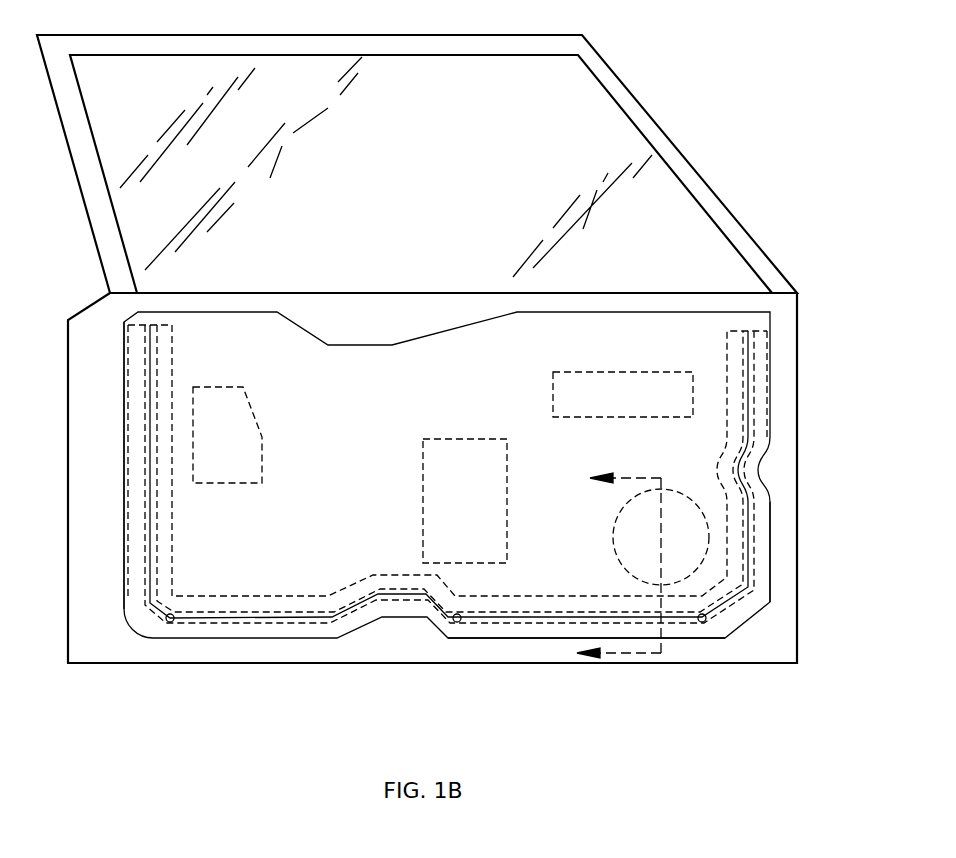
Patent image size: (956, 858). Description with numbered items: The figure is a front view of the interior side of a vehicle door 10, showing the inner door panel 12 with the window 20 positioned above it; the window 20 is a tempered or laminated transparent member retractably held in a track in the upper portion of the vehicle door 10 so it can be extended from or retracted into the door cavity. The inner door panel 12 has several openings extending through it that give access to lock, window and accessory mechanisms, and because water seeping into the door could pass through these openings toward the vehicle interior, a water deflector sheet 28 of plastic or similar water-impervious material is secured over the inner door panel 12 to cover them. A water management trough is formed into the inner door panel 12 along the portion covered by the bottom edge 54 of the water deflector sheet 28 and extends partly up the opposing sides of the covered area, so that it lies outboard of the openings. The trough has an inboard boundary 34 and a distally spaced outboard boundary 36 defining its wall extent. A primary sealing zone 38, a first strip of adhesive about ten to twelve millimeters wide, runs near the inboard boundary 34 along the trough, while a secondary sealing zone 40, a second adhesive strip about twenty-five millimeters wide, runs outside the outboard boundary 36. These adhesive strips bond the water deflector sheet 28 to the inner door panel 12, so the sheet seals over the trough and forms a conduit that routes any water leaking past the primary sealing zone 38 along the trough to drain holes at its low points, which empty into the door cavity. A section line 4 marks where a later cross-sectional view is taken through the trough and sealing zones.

The vehicle door 10 is at (222, 718).
The inner door panel 12 is at (83, 401).
The window 20 is at (376, 187).
The water deflector sheet 28 is at (380, 396).
The inboard boundary 34 is at (742, 428).
The outboard boundary 36 is at (755, 415).
The primary sealing zone 38 is at (737, 348).
The secondary sealing zone 40 is at (759, 343).
The bottom edge 54 is at (518, 638).
The section line 4- 4 is at (608, 566).